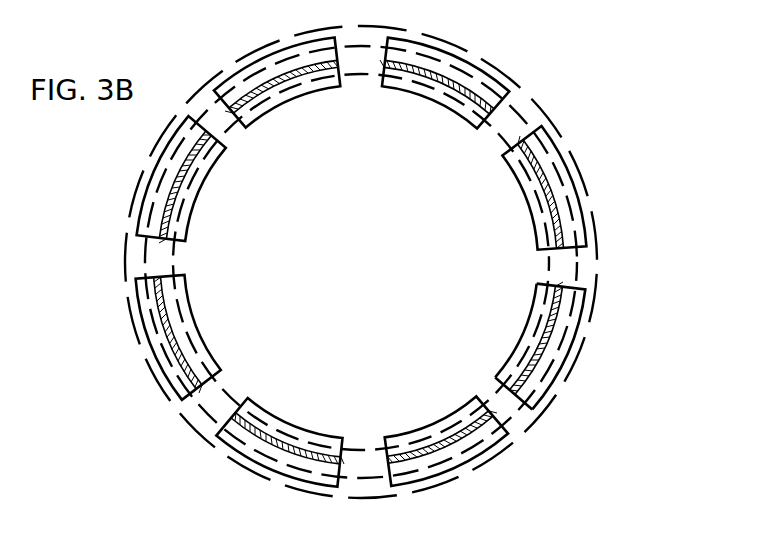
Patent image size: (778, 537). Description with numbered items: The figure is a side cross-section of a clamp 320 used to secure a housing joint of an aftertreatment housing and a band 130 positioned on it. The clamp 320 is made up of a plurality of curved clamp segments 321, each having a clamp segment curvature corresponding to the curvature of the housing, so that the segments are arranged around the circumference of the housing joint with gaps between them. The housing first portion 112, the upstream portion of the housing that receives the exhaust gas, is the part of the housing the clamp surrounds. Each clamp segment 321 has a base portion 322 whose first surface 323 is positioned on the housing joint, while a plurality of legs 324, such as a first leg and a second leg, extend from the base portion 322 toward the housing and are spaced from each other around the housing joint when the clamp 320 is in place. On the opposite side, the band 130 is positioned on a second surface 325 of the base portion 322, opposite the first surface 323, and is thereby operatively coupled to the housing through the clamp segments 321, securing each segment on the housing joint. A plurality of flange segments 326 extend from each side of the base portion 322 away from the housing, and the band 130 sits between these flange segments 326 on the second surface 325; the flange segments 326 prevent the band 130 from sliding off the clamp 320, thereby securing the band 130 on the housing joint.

The clamp 320 is at (581, 96).
The clamp segment 321 is at (470, 54).
The band 130 is at (582, 170).
The housing first portion 112 is at (556, 236).
The flange segment 326 is at (578, 315).
The first surface 323 is at (542, 342).
The base portion 322 is at (528, 368).
The leg 324 is at (518, 378).
The second surface 325 is at (518, 432).